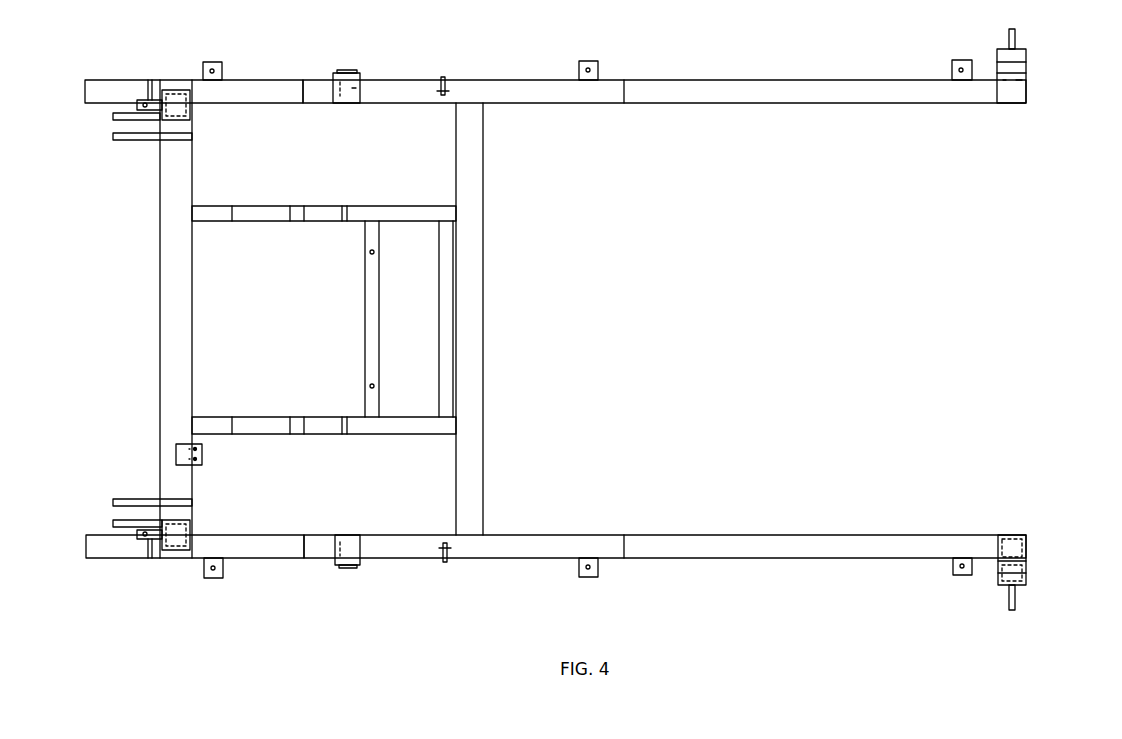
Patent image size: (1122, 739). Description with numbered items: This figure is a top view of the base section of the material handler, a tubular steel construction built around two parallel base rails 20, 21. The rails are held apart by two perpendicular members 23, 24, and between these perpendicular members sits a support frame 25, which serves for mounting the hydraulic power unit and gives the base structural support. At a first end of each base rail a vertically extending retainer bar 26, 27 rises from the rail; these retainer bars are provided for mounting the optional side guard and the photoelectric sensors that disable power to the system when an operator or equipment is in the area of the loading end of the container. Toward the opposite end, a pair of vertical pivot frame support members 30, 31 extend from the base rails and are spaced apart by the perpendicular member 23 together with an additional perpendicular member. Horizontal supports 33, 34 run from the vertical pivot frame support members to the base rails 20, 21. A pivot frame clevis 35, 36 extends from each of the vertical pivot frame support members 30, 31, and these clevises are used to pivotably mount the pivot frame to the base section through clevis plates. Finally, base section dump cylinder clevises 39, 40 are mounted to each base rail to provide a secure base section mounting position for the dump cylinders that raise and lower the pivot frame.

The base rail 20 is at (722, 548).
The base rail 21 is at (664, 87).
The perpendicular member 23 is at (168, 315).
The perpendicular member 24 is at (483, 196).
The support frame 25 is at (355, 205).
The retainer bar 26 is at (1030, 563).
The retainer bar 27 is at (1018, 88).
The vertical pivot frame support member 30 is at (178, 552).
The vertical pivot frame support member 31 is at (176, 104).
The horizontal support 33 is at (262, 551).
The horizontal support 34 is at (263, 87).
The pivot frame clevis 35 is at (120, 499).
The pivot frame clevis 36 is at (130, 141).
The base section dump cylinder clevis 39 is at (347, 560).
The base section dump cylinder clevis 40 is at (352, 88).